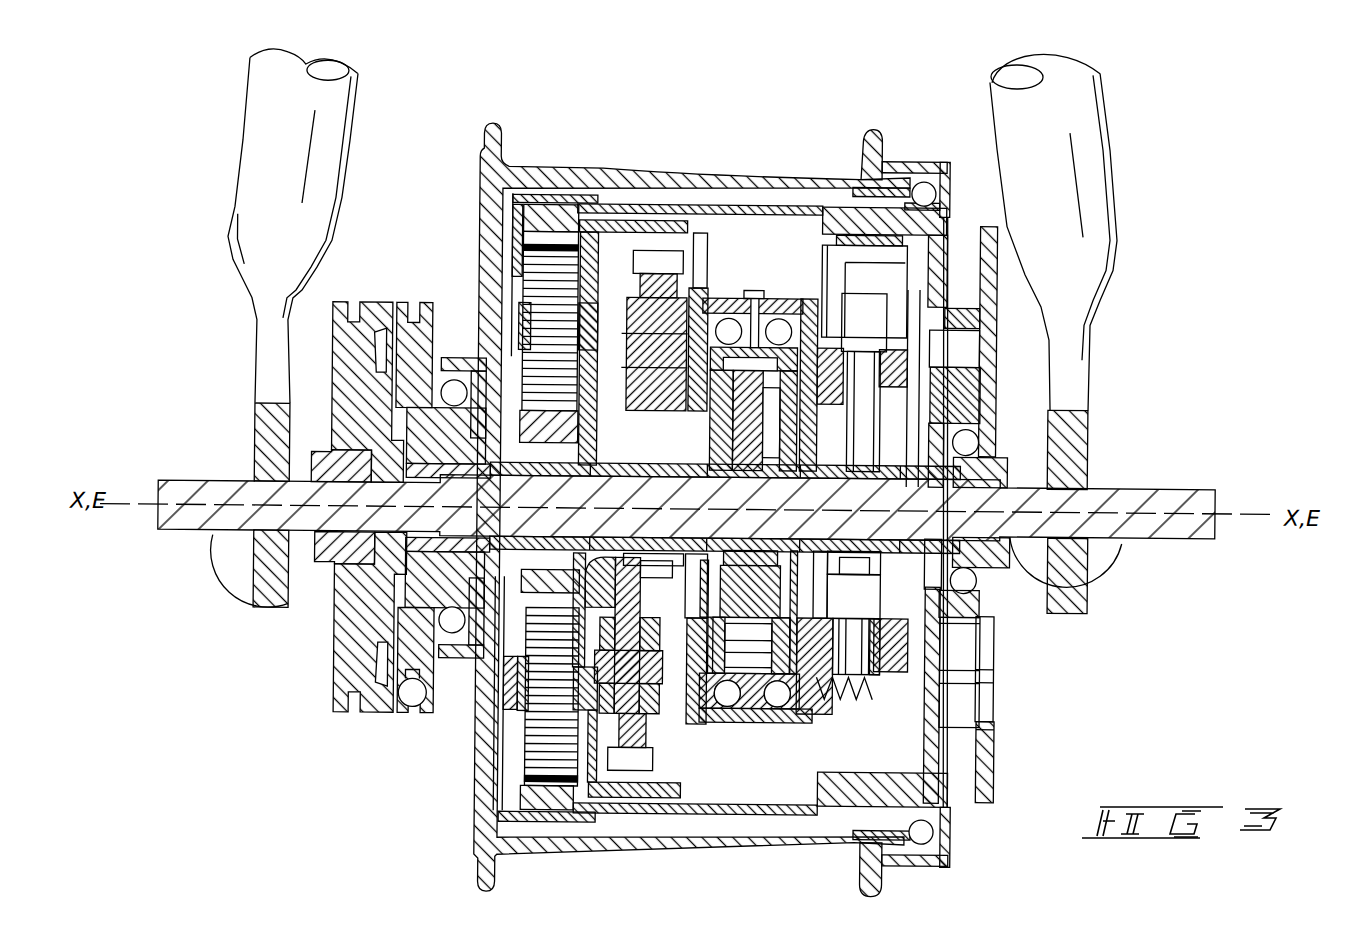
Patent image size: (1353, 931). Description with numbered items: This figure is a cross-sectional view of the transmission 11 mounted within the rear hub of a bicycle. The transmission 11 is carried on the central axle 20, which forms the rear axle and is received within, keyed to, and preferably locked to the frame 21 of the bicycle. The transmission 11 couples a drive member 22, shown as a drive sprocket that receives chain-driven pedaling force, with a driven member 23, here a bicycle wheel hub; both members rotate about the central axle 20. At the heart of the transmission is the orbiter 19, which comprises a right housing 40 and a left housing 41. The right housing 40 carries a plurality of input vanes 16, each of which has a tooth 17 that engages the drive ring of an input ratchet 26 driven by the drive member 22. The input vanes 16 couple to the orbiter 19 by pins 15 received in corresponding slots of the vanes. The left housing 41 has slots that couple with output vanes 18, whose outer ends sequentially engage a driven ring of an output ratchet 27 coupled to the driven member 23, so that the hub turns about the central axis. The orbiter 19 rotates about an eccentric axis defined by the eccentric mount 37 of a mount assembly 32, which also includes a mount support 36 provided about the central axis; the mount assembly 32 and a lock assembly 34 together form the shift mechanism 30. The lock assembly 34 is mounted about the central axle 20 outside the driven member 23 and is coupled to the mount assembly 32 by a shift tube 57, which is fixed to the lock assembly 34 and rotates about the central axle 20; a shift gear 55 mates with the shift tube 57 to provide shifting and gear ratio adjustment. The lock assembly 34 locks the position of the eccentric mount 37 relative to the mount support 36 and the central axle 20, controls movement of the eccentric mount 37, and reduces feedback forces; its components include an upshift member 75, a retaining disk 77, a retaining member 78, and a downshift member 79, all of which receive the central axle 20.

The transmission 11 is at (1017, 370).
The pins 15 is at (893, 360).
The input vanes 16 is at (853, 269).
The tooth 17 is at (834, 239).
The output vanes 18 is at (630, 306).
The orbiter 19 is at (802, 726).
The central axle 20 is at (1182, 517).
The frame 21 is at (272, 188).
The drive member 22 is at (1005, 787).
The driven member 23 is at (866, 146).
The input ratchet 26 is at (836, 809).
The output ratchet 27 is at (645, 801).
The shift mechanism 30 is at (321, 822).
The mount assembly 32 is at (719, 729).
The lock assembly 34 is at (342, 493).
The mount support 36 is at (744, 428).
The eccentric mount 37 is at (743, 310).
The right housing 40 is at (807, 711).
The left housing 41 is at (714, 300).
The shift gear 55 is at (722, 444).
The shift tube 57 is at (706, 593).
The upshift member 75 is at (442, 675).
The retaining disk 77 is at (379, 406).
The retaining member 78 is at (381, 333).
The downshift member 79 is at (352, 677).